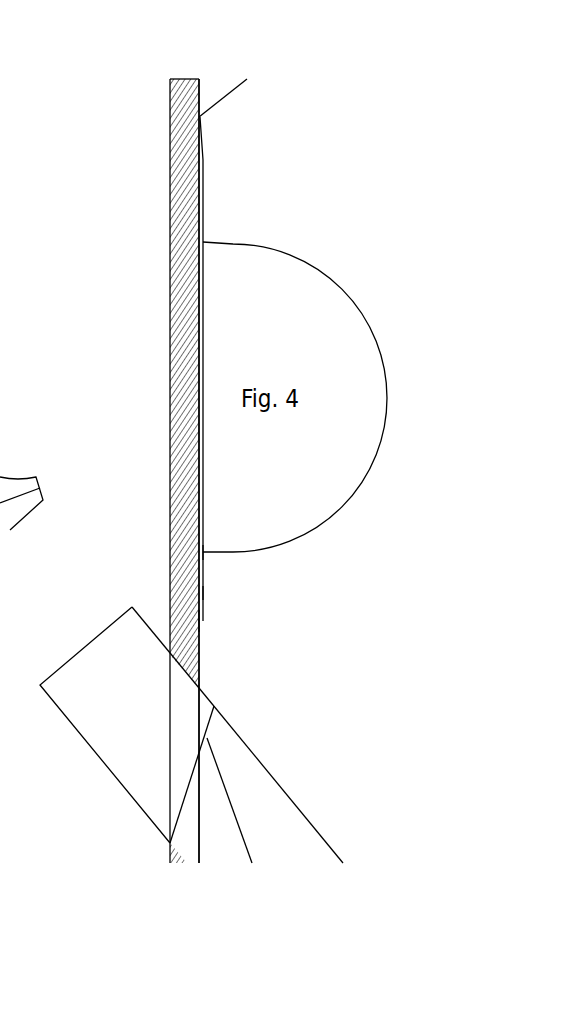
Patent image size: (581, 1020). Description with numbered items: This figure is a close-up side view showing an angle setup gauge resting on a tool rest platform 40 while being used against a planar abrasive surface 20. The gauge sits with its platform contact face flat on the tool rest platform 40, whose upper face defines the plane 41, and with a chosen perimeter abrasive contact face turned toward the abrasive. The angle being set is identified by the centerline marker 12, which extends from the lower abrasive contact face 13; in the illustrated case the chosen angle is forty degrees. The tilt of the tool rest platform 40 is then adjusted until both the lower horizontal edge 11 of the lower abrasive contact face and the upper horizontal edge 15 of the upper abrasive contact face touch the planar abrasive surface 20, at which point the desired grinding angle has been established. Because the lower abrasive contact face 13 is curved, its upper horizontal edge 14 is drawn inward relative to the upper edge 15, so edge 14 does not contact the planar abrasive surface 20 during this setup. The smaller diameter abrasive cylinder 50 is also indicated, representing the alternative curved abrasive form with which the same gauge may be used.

The lower horizontal edge of setup gauge lower abrasive contact face 11 is at (199, 687).
The centerline marker of lower abrasive contact face 12 is at (311, 621).
The left side vertical edge of setup gauge lower abrasive contact face 13 is at (203, 593).
The upper horizontal edge of setup gauge lower abrasive contact face 14 is at (203, 552).
The upper horizontal edge of setup gauge upper abrasive contact face 15 is at (200, 120).
The planar abrasive surface 20 is at (203, 357).
The tool rest platform 40 is at (203, 621).
The plane of the tool rest platform upper face 41 is at (247, 743).
The smaller diameter abrasive cylinder 50 is at (203, 181).